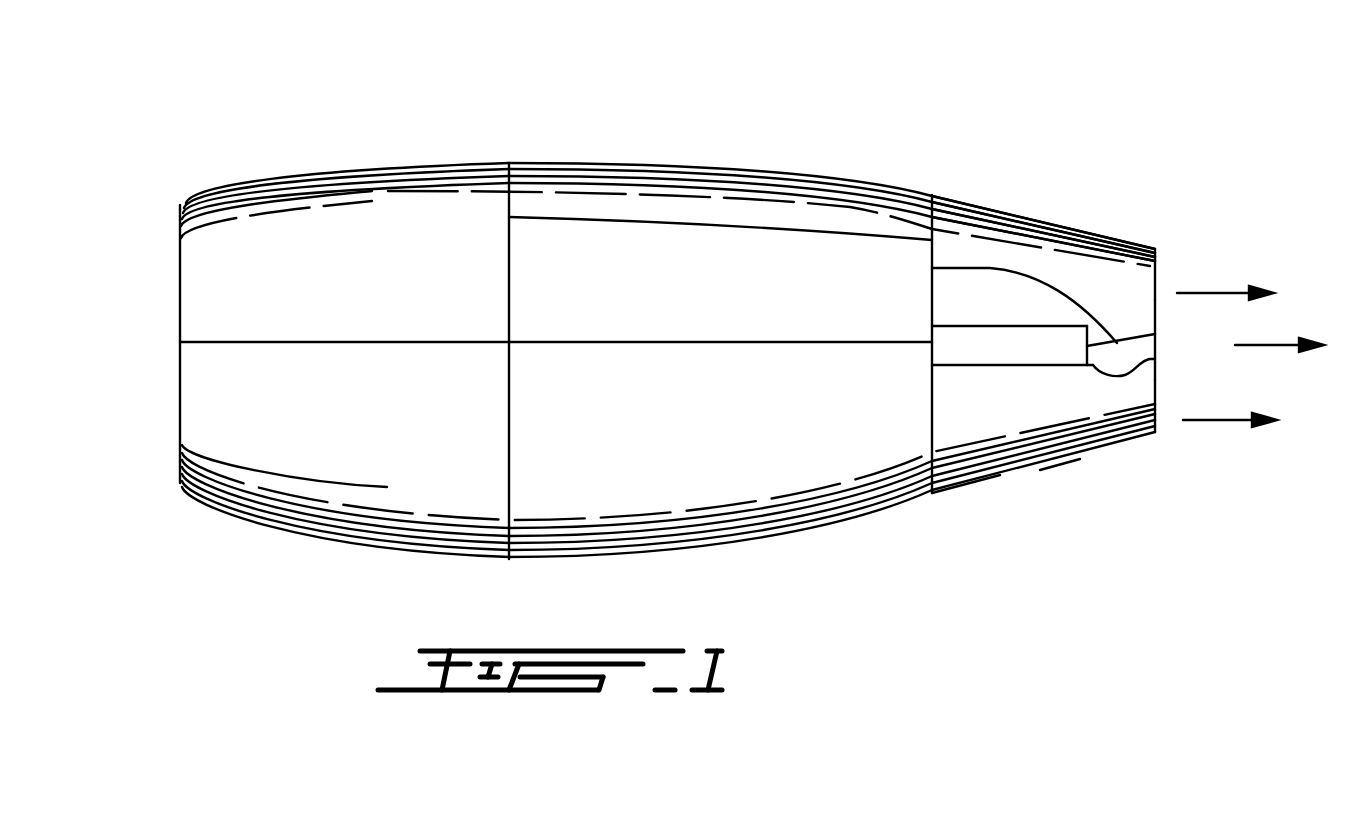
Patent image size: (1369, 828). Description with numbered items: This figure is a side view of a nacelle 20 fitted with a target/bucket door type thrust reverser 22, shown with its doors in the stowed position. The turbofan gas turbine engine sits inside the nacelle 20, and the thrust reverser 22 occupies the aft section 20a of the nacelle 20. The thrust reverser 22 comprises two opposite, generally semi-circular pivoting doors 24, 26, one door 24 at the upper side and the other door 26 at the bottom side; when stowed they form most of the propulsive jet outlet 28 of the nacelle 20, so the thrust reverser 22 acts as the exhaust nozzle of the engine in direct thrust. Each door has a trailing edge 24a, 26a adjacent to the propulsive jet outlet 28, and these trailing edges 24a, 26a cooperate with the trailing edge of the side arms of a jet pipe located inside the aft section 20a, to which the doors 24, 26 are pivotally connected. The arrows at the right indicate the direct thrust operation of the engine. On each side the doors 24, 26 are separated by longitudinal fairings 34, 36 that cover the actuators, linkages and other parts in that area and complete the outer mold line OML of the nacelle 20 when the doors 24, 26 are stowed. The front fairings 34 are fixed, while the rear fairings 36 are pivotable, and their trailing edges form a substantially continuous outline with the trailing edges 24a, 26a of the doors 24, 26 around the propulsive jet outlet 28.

The nacelle 20 is at (180, 158).
The aft section 20a is at (1073, 389).
The thrust reverser 22 is at (998, 512).
The door 24 is at (1125, 266).
The trailing edge 24a is at (1155, 270).
The door 26 is at (1070, 438).
The trailing edge 26a is at (1155, 403).
The propulsive jet outlet 28 is at (1215, 362).
The front fairing 34 is at (975, 343).
The rear fairing 36 is at (932, 268).
The outer mold line OML is at (1046, 478).